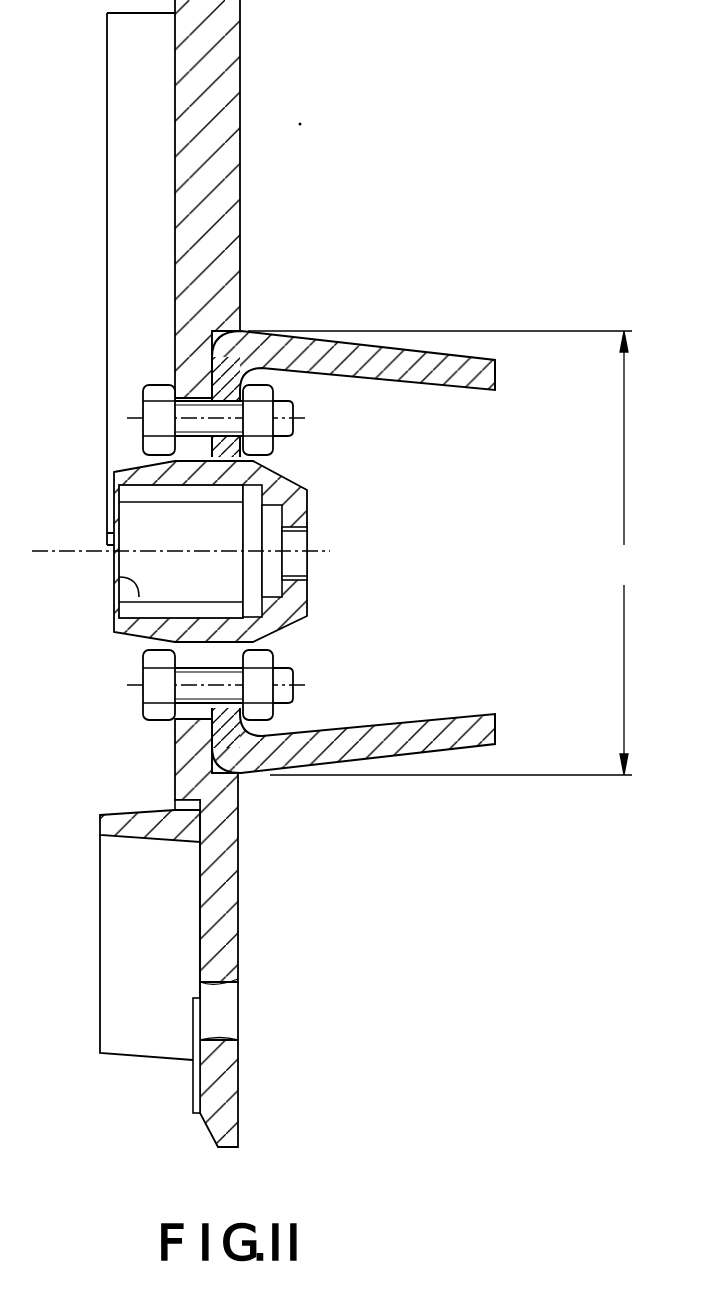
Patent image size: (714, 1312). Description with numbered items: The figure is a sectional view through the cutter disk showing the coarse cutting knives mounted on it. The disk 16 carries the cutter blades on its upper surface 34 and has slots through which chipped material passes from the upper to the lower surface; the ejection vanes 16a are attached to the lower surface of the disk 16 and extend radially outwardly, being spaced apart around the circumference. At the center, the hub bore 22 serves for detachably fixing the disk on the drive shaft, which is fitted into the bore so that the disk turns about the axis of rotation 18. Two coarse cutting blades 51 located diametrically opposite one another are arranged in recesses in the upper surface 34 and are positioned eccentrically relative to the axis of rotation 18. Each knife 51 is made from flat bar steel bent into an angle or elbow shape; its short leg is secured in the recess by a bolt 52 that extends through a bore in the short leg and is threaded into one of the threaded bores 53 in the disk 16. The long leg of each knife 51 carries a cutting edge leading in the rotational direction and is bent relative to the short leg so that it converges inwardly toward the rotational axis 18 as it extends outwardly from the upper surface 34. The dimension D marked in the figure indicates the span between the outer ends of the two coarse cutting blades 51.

The disk 16 is at (200, 945).
The ejection vanes 16a is at (115, 882).
The axis of rotation 18 is at (78, 550).
The hub bore 22 is at (124, 577).
The upper surface 34 is at (238, 908).
The coarse cutting blades 51 is at (353, 348).
The bolts 52 is at (150, 424).
The threaded bores 53 is at (190, 397).
The diameter D is at (441, 553).